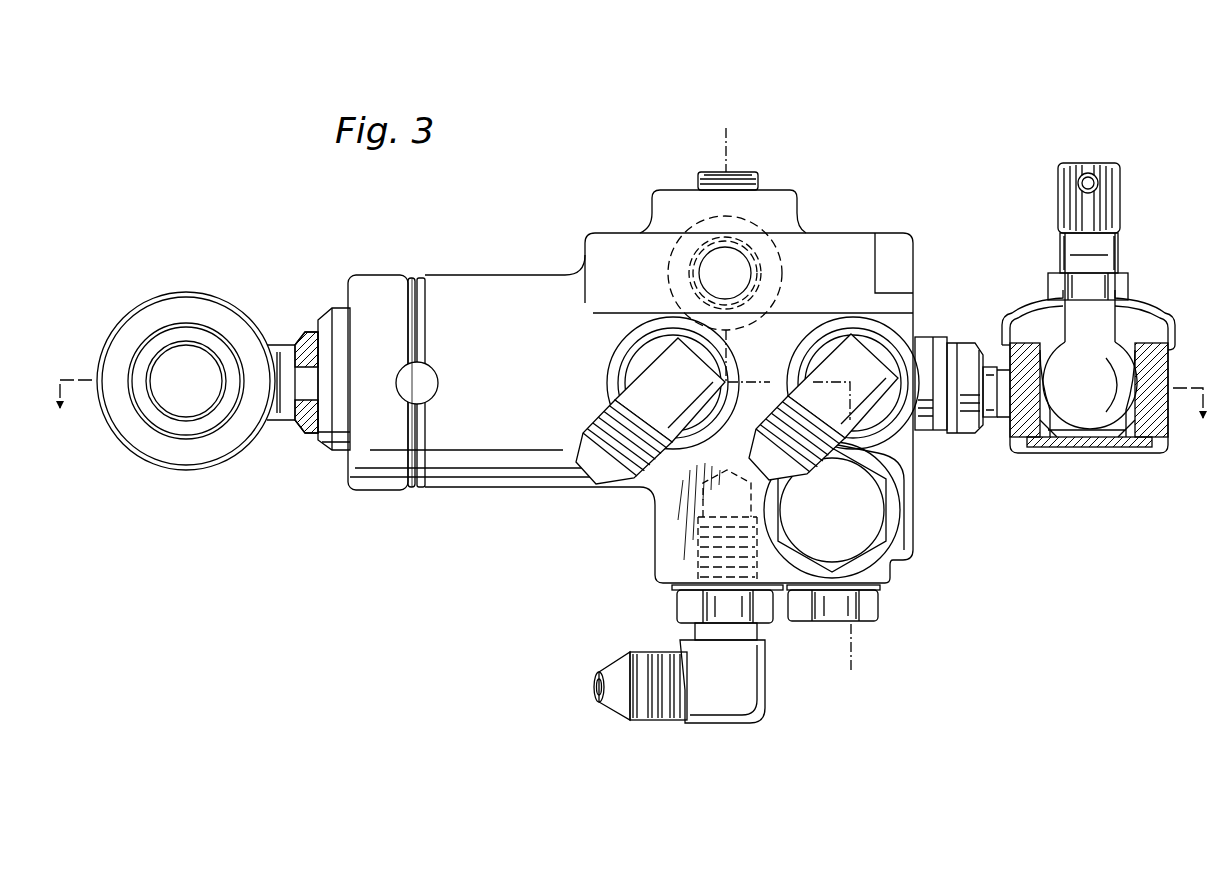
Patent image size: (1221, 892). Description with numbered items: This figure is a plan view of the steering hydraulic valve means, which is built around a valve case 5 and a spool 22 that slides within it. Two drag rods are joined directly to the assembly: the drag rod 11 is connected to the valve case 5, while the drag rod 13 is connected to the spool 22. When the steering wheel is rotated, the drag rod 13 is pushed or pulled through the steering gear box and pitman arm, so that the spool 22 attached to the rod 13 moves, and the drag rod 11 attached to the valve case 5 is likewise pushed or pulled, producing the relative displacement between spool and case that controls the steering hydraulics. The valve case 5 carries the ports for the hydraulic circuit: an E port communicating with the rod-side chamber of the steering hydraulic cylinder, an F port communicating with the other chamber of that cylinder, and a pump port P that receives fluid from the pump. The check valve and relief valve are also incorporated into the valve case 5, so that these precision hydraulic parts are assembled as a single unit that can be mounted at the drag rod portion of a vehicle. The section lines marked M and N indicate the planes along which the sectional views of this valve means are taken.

The valve case 5 is at (568, 470).
The drag rod 11 is at (307, 336).
The drag rod 13 is at (988, 418).
The spool 22 is at (924, 418).
The E port E is at (680, 398).
The F port F is at (857, 375).
The pump port P is at (730, 694).
The section line M- M is at (722, 138).
The section line N- N is at (627, 417).